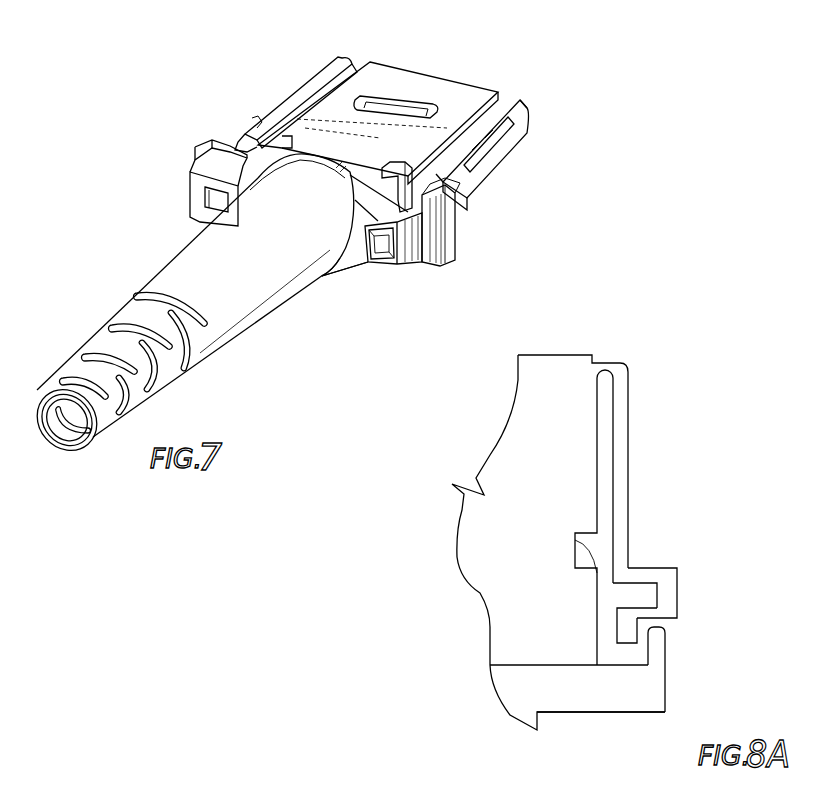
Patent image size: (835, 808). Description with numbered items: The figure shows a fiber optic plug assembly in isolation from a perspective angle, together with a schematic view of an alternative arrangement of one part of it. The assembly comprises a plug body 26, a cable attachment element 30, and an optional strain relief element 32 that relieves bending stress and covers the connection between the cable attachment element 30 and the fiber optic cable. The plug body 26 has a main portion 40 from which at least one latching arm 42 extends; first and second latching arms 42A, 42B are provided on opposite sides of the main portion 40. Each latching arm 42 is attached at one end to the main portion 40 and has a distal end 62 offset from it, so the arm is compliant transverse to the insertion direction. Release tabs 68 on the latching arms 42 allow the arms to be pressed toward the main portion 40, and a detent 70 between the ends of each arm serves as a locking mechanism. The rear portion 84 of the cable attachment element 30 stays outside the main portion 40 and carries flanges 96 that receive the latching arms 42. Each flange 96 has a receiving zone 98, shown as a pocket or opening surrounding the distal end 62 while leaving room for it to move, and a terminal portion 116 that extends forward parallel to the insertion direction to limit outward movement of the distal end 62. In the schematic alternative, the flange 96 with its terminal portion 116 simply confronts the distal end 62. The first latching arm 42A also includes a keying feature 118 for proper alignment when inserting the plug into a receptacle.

In FIG. 7, the plug body 26 is at (486, 73).
In FIG. 8A, the plug body 26 is at (634, 369).
In FIG. 7, the cable attachment element 30 is at (180, 194).
In FIG. 8A, the cable attachment element 30 is at (486, 689).
In FIG. 7, the strain relief element 32 is at (183, 252).
In FIG. 7, the main portion 40 is at (412, 74).
In FIG. 8A, the main portion 40 is at (550, 510).
In FIG. 7, the latching arm 42 is at (421, 136).
In FIG. 8A, the latching arm 42 is at (636, 495).
In FIG. 7, the first latching arm 42A is at (512, 185).
In FIG. 7, the second latching arm 42B is at (298, 84).
In FIG. 7, the distal end 62 is at (395, 243).
In FIG. 8A, the distal end 62 is at (617, 640).
In FIG. 7, the release tab 68 is at (452, 242).
In FIG. 8A, the release tab 68 is at (678, 583).
In FIG. 7, the detent 70 is at (468, 210).
In FIG. 7, the rear portion 84 is at (353, 280).
In FIG. 8A, the rear portion 84 is at (558, 728).
In FIG. 7, the flange 96 is at (362, 273).
In FIG. 8A, the flange 96 is at (620, 712).
In FIG. 7, the receiving zone 98 is at (393, 242).
In FIG. 8A, the terminal portion 116 is at (665, 643).
In FIG. 7, the keying feature 118 is at (537, 140).